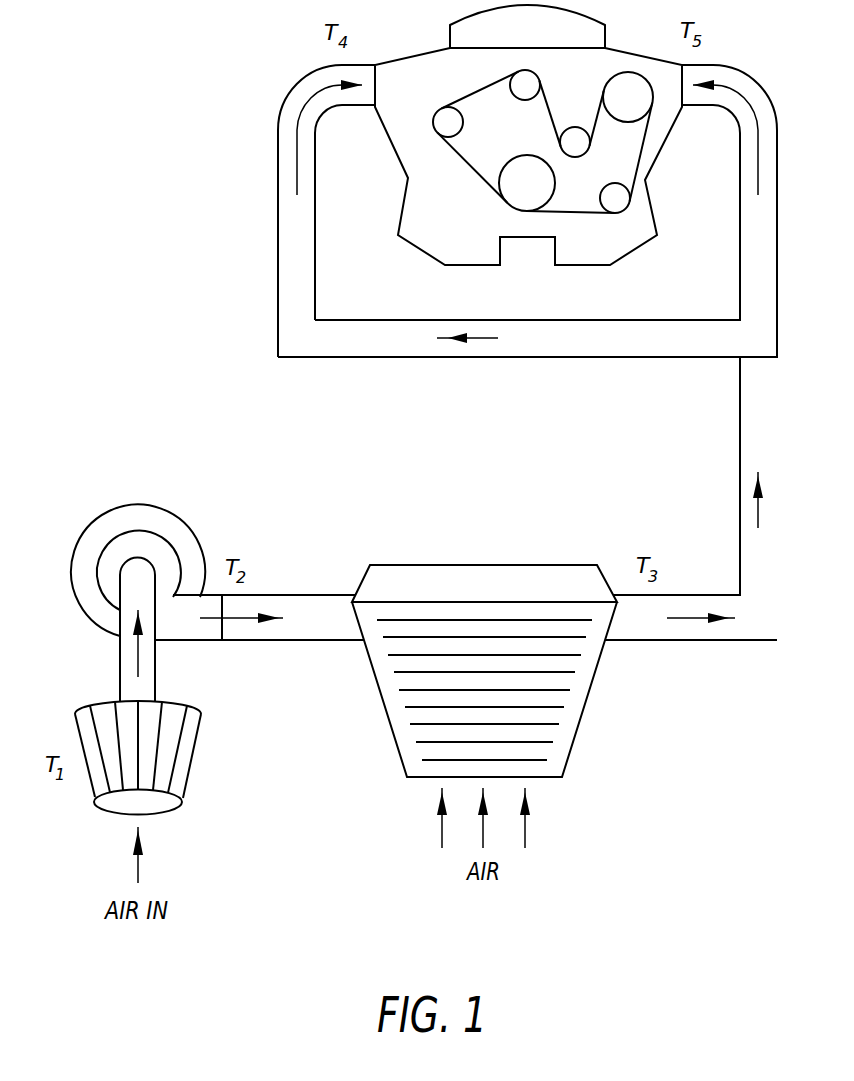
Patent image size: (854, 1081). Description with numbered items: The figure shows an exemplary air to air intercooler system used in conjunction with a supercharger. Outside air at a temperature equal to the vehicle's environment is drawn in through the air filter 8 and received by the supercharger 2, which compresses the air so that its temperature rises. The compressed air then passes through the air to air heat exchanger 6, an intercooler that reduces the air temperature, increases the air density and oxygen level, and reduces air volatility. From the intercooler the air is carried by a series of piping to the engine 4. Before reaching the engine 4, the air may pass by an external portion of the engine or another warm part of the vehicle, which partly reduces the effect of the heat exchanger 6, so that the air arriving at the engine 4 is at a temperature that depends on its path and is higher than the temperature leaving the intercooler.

The supercharger 2 is at (72, 560).
The engine 4 is at (613, 238).
The air to air heat exchanger 6 is at (577, 697).
The air filter 8 is at (185, 787).